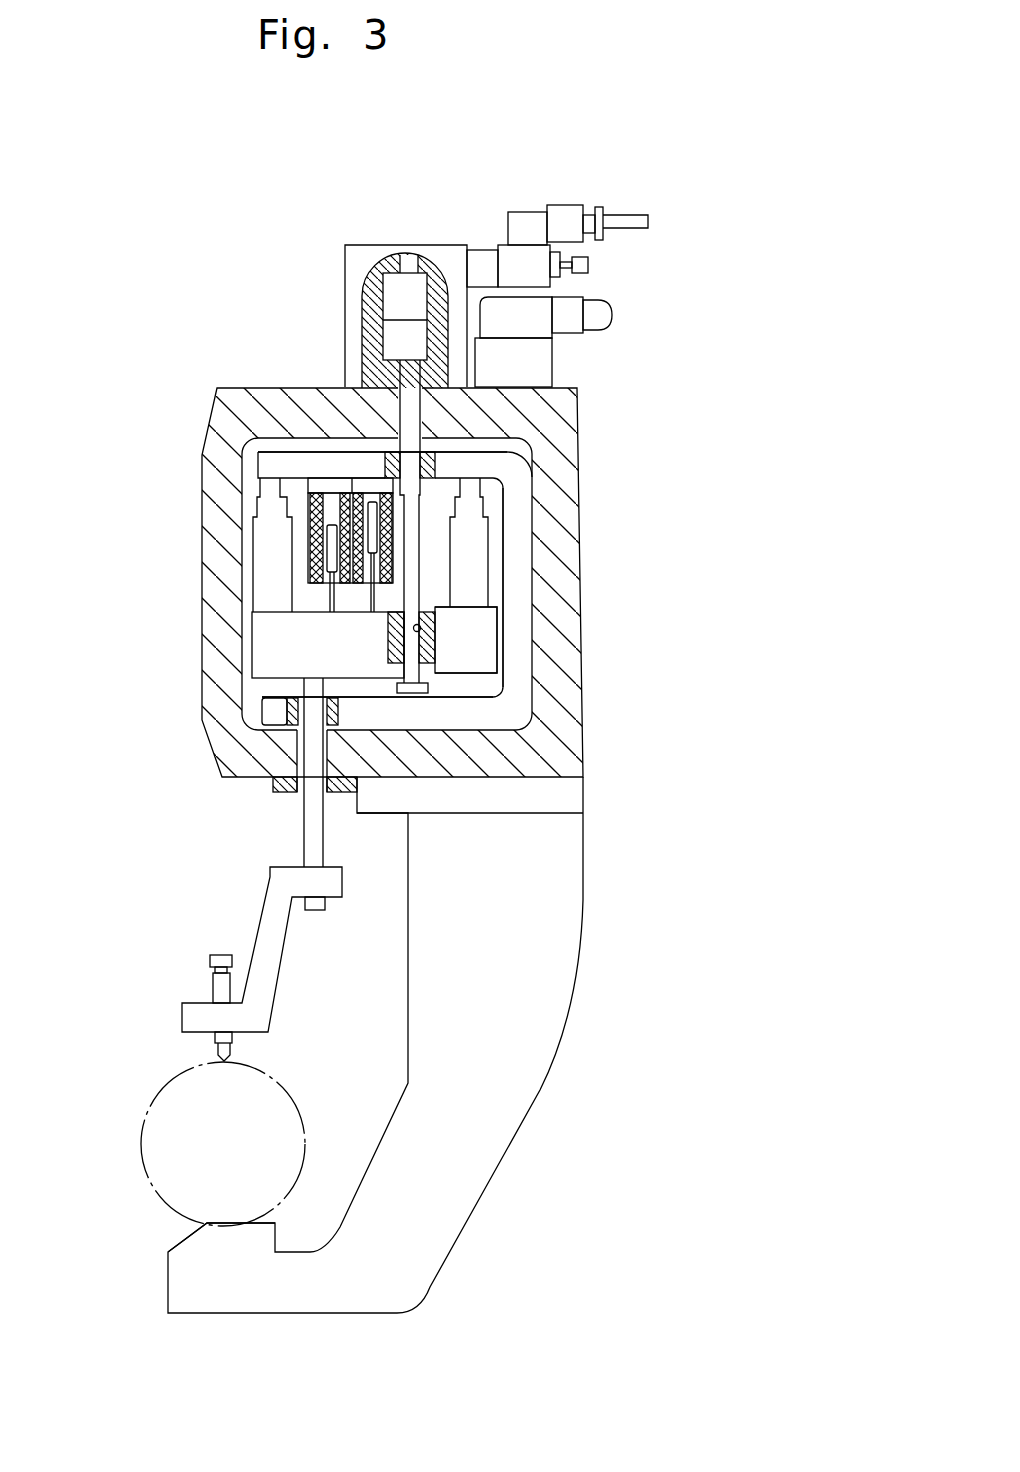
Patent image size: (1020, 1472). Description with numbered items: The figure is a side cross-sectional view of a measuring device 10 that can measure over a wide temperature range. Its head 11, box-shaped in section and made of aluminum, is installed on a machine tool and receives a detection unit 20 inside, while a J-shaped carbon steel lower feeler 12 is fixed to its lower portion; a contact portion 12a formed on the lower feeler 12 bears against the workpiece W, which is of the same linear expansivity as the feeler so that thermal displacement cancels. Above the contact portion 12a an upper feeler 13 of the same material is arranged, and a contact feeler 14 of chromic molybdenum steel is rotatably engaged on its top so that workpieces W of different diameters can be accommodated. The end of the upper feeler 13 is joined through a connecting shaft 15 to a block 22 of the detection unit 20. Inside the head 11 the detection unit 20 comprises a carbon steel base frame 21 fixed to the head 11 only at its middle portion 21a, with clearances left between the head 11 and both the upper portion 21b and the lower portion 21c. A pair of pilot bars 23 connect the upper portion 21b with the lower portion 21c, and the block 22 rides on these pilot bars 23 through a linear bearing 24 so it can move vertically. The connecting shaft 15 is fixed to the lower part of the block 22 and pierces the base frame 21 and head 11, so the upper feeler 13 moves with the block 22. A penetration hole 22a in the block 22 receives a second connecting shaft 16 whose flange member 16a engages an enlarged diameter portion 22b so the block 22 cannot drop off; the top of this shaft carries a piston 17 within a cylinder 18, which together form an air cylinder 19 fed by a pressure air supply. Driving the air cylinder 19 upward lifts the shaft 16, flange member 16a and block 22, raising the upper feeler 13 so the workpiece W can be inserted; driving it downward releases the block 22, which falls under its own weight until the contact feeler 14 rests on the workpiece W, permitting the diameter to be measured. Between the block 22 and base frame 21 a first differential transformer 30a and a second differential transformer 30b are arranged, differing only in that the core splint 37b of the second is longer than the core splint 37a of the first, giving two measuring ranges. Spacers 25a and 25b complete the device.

The measuring device 10 is at (153, 253).
The head 11 is at (568, 427).
The lower feeler 12 is at (557, 888).
The contact portion 12a is at (220, 1252).
The upper feeler 13 is at (268, 913).
The contact feeler 14 is at (220, 1046).
The connecting shaft 15 is at (312, 827).
The connecting shaft 16 is at (480, 605).
The flange member 16a is at (410, 693).
The piston 17 is at (393, 345).
The cylinder 18 is at (448, 250).
The air cylinder 19 is at (373, 230).
The detection unit 20 is at (253, 485).
The base frame 21 is at (522, 523).
The middle portion 21a is at (517, 573).
The upper portion 21b is at (318, 487).
The lower portion 21c is at (457, 712).
The block 22 is at (267, 658).
The penetration hole 22a is at (460, 637).
The enlarged diameter portion 22b is at (490, 673).
The pilot bars 23 is at (270, 488).
The linear bearing 24 is at (267, 558).
The spacer 25a is at (365, 483).
The spacer 25b is at (352, 495).
The first differential transformer 30a is at (303, 585).
The second differential transformer 30b is at (262, 697).
The core splint 37a is at (360, 592).
The core splint 37b is at (372, 615).
The workpiece W is at (172, 1112).